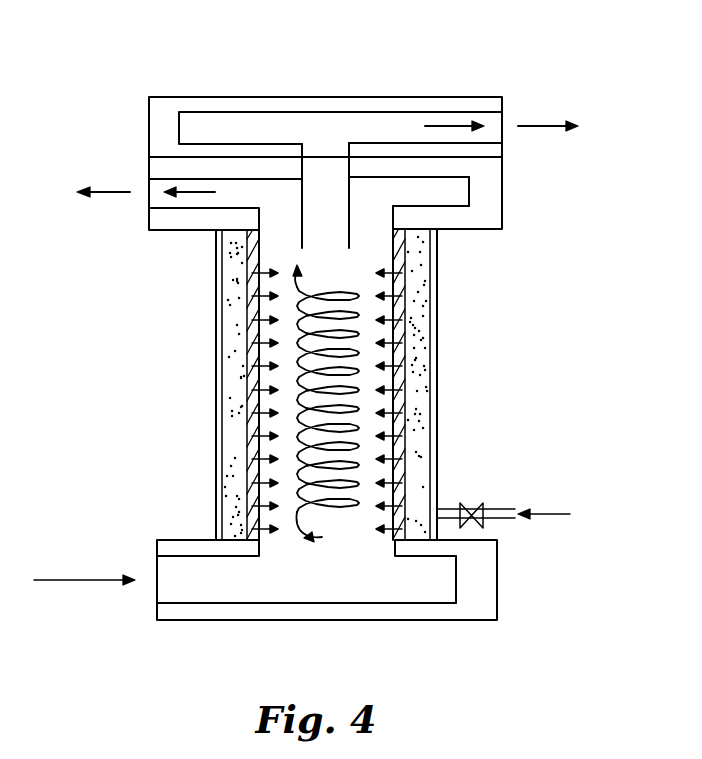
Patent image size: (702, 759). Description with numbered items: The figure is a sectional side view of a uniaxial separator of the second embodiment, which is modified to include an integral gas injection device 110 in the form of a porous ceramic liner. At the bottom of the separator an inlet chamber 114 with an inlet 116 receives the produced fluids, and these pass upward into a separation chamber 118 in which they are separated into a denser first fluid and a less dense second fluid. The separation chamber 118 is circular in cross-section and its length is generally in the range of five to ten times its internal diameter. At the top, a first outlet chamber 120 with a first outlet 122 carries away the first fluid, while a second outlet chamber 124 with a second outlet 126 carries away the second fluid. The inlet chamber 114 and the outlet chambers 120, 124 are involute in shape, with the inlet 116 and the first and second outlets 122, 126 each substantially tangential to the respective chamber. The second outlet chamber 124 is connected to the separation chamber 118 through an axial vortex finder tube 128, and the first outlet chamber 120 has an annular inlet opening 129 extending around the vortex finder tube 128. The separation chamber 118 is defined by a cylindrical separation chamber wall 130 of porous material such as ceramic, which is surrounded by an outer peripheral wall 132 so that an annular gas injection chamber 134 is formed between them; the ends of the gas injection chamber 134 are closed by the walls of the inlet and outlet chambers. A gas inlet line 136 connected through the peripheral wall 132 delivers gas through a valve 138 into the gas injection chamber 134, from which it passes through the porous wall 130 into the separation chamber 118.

The gas injection device 110 is at (283, 472).
The inlet chamber 114 is at (433, 584).
The inlet 116 is at (198, 580).
The separation chamber 118 is at (360, 378).
The first outlet chamber 120 is at (452, 193).
The first outlet 122 is at (155, 181).
The second outlet chamber 124 is at (198, 120).
The second outlet 126 is at (492, 123).
The vortex finder tube 128 is at (349, 202).
The annular inlet opening 129 is at (280, 217).
The separation chamber wall 130 is at (400, 318).
The outer peripheral wall 132 is at (216, 405).
The gas injection chamber 134 is at (233, 293).
The gas inlet line 136 is at (514, 492).
The valve 138 is at (465, 510).